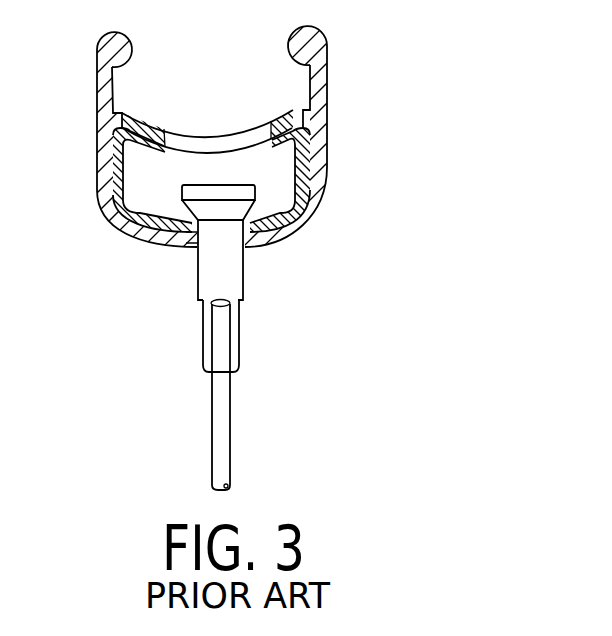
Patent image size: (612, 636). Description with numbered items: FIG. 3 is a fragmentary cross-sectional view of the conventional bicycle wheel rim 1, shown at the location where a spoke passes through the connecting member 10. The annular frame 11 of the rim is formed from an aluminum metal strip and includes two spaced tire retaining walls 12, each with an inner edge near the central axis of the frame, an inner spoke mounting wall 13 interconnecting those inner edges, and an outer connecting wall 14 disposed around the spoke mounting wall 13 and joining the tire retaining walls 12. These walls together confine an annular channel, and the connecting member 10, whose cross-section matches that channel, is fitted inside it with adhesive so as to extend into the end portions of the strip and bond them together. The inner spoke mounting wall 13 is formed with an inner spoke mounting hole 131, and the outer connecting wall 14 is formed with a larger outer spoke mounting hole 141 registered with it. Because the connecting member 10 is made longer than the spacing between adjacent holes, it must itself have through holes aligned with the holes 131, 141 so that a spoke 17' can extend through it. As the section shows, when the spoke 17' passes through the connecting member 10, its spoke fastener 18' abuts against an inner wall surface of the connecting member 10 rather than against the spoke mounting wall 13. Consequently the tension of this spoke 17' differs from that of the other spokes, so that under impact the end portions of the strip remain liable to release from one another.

The bicycle wheel rim 1 is at (454, 142).
The connecting member 10 is at (324, 165).
The annular frame 11 is at (328, 50).
The tire retaining walls 12 is at (327, 125).
The inner spoke mounting wall 13 is at (270, 228).
The inner spoke mounting holes 131 is at (183, 243).
The outer connecting wall 14 is at (320, 90).
The outer spoke mounting holes 141 is at (177, 135).
The spoke 17' is at (260, 395).
The spoke fastener 18' is at (291, 242).